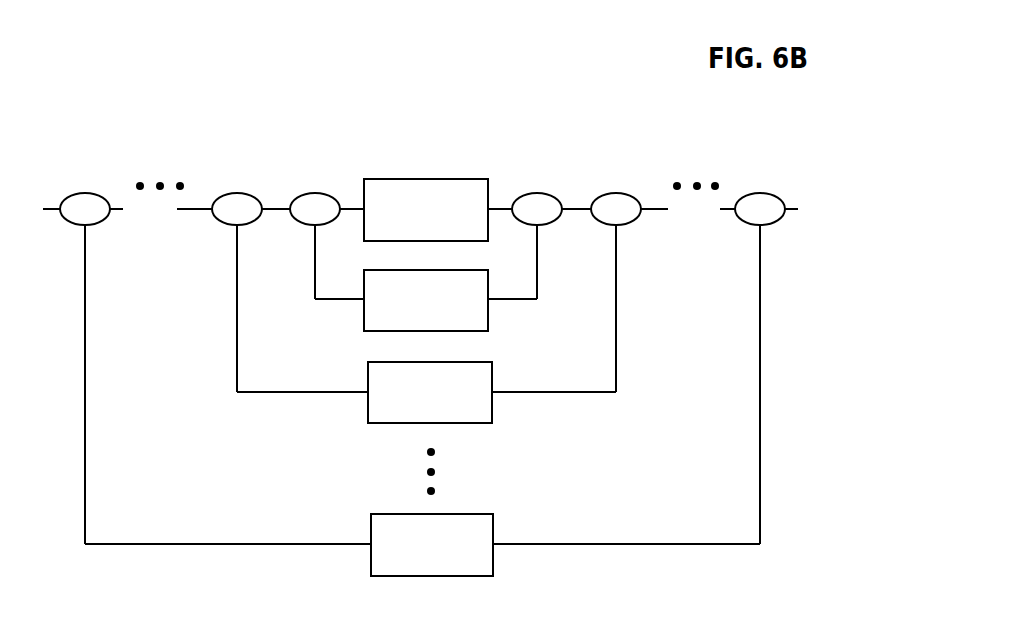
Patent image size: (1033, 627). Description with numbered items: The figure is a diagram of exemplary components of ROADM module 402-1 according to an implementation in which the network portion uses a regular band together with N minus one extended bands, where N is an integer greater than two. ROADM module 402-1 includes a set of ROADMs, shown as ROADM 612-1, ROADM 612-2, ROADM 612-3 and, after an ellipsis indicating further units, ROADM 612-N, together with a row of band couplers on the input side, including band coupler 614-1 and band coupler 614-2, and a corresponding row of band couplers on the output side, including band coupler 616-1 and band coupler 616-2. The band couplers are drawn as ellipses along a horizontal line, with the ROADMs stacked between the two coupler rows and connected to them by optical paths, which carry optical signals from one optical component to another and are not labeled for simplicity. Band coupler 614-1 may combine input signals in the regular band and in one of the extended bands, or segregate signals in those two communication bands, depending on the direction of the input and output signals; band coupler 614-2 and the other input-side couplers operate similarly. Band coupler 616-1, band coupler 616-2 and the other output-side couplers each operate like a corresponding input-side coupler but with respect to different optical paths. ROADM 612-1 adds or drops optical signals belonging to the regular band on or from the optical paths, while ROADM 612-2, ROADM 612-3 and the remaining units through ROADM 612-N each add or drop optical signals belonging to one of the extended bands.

The ROADM module 402-1 is at (108, 90).
The band coupler 614-2 is at (237, 193).
The band coupler 614-1 is at (315, 193).
The band coupler 616-1 is at (537, 193).
The band coupler 616-2 is at (616, 193).
The ROADM 612-1 is at (426, 210).
The ROADM 612-2 is at (426, 300).
The ROADM 612-3 is at (426, 392).
The ROADM 612-N is at (422, 545).